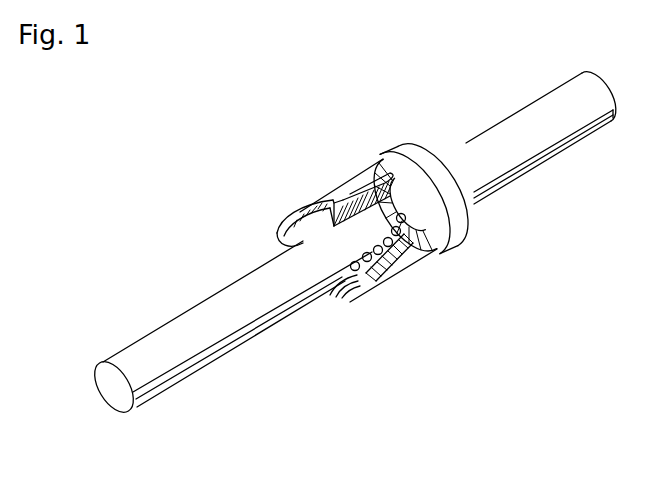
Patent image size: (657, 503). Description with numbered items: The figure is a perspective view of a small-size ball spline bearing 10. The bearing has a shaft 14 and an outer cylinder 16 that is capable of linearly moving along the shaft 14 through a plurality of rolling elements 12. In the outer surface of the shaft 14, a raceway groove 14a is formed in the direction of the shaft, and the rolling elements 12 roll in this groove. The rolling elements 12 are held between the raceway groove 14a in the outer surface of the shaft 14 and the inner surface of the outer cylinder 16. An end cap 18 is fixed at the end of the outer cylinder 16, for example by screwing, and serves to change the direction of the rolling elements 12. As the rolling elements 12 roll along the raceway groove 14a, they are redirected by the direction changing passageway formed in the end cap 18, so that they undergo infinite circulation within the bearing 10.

The ball spline bearing 10 is at (303, 147).
The rolling element 12 is at (370, 280).
The shaft 14 is at (118, 385).
The raceway groove 14a is at (163, 390).
The outer cylinder 16 is at (420, 242).
The end cap 18 is at (413, 150).